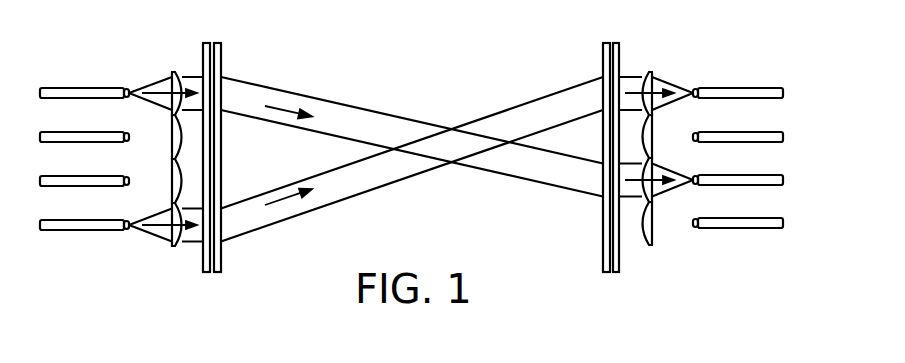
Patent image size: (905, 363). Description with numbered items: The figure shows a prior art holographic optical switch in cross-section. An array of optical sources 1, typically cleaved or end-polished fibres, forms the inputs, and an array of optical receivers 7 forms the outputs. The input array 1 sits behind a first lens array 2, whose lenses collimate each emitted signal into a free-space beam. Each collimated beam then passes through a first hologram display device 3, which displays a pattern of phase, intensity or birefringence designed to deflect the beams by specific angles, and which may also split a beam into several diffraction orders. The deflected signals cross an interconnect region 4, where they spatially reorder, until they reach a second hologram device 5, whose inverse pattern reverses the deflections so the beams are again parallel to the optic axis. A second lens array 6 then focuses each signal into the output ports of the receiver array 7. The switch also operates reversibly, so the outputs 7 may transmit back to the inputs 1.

The array of optical sources 1 is at (68, 231).
The first lens array 2 is at (175, 247).
The first hologram display device 3 is at (221, 263).
The interconnect region 4 is at (453, 172).
The second hologram device 5 is at (603, 257).
The second lens array 6 is at (650, 246).
The array of optical receivers 7 is at (755, 229).